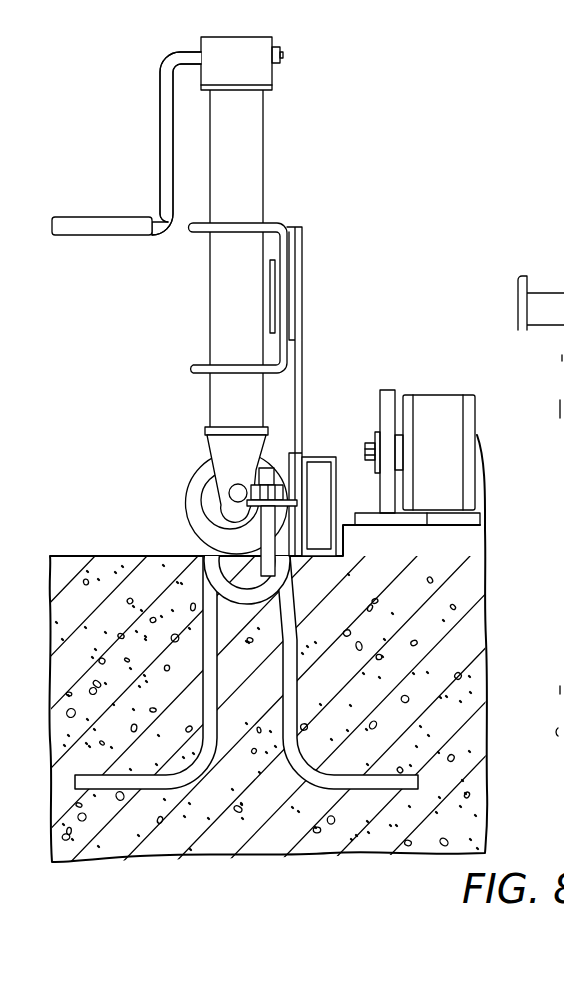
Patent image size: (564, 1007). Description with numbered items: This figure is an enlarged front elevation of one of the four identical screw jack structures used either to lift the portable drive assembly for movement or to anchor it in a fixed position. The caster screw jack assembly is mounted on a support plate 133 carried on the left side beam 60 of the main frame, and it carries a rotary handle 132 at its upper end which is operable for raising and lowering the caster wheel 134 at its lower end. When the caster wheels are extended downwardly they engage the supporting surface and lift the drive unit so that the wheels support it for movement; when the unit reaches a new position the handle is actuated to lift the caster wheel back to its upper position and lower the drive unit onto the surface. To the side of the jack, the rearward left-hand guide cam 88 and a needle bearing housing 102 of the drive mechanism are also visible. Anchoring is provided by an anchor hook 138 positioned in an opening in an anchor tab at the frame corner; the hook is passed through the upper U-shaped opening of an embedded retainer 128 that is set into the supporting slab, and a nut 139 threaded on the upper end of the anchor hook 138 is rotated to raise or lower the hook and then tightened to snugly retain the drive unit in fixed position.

The left side beam 60 is at (318, 457).
The rearward left-hand guide cam 88 is at (392, 372).
The needle bearing housing 102 is at (433, 405).
The embedded retainer 128 is at (296, 672).
The rotary handle 132 is at (165, 155).
The support plate 133 is at (302, 368).
The caster wheel 134 is at (185, 503).
The anchor hook 138 is at (260, 548).
The nut 139 is at (266, 470).